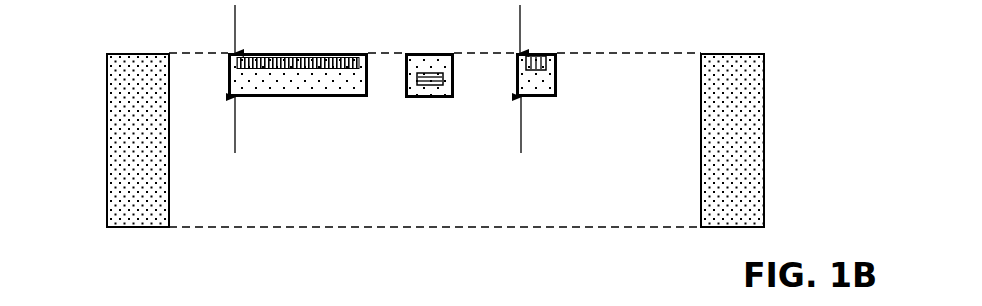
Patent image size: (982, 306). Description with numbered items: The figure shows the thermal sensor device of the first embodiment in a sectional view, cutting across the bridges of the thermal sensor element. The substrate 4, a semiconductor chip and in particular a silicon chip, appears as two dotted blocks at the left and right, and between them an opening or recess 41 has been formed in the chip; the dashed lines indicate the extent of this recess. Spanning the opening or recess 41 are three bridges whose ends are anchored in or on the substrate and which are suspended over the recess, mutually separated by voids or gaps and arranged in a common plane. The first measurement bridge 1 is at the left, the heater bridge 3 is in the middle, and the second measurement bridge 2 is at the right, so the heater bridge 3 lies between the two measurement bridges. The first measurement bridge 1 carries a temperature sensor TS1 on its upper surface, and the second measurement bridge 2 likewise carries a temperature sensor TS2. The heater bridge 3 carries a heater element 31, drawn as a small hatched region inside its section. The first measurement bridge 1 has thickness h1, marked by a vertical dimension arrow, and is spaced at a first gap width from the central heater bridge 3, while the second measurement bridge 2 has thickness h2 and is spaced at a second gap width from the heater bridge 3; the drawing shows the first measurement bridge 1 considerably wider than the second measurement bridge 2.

The first measurement bridge 1 is at (260, 97).
The second measurement bridge 2 is at (558, 97).
The heater bridge 3 is at (424, 99).
The heater element 31 is at (417, 84).
The substrate 4 is at (124, 115).
The opening or recess 41 is at (684, 211).
The temperature sensor TS1 is at (255, 55).
The temperature sensor TS2 is at (535, 55).
The thickness of the first measurement bridge h1 is at (219, 125).
The thickness of the second measurement bridge h2 is at (538, 125).